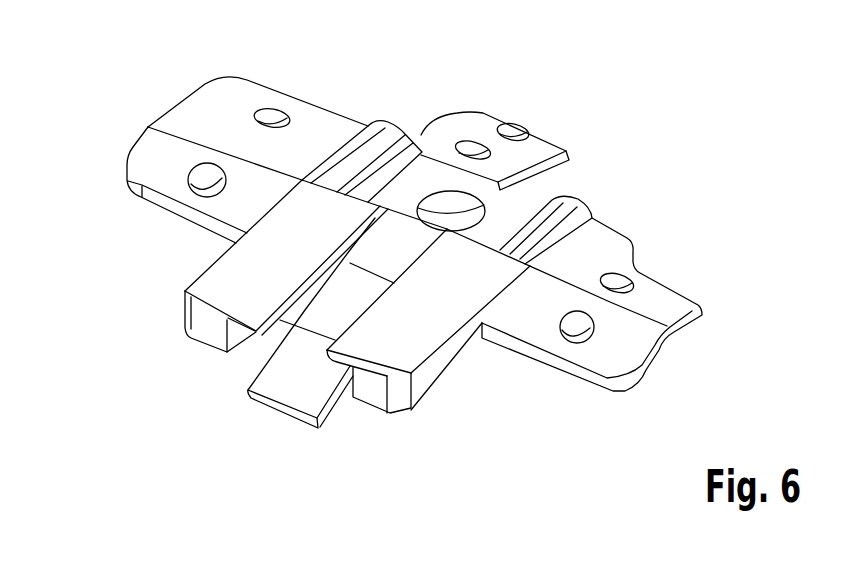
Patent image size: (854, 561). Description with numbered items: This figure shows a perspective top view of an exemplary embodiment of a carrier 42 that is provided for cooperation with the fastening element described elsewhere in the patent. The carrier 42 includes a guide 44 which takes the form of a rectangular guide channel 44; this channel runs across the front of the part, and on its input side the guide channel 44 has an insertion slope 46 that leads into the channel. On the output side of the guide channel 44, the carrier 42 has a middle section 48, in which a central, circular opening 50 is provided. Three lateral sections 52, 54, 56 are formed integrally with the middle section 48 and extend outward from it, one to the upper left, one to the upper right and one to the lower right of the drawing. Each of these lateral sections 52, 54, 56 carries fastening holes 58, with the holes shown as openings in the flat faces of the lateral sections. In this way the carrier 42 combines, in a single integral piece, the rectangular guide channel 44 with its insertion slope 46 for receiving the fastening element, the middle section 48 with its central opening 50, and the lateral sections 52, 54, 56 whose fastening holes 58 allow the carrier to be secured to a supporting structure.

The carrier 42 is at (118, 104).
The guide channel 44 is at (343, 310).
The insertion slope 46 is at (298, 393).
The middle section 48 is at (513, 208).
The central opening 50 is at (445, 213).
The lateral section 52 is at (325, 130).
The lateral section 54 is at (540, 150).
The lateral section 56 is at (675, 306).
The fastening holes 58 is at (276, 116).